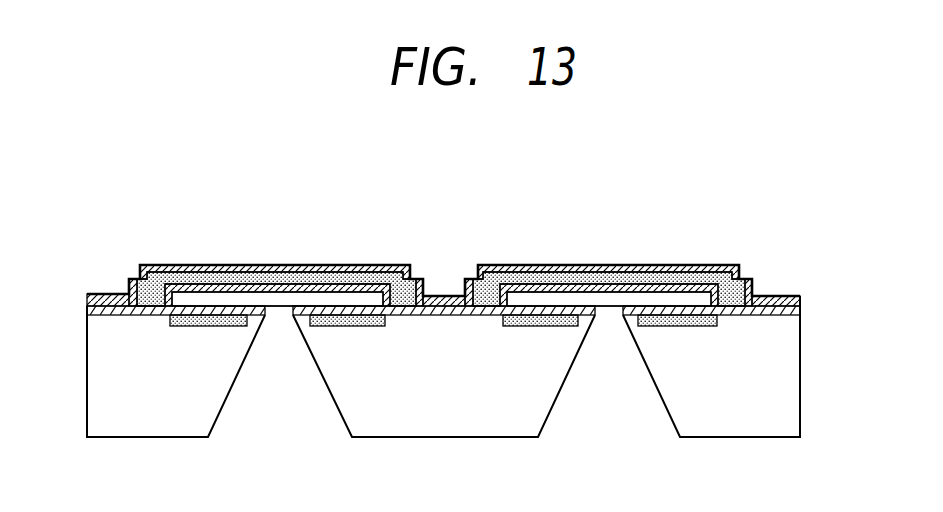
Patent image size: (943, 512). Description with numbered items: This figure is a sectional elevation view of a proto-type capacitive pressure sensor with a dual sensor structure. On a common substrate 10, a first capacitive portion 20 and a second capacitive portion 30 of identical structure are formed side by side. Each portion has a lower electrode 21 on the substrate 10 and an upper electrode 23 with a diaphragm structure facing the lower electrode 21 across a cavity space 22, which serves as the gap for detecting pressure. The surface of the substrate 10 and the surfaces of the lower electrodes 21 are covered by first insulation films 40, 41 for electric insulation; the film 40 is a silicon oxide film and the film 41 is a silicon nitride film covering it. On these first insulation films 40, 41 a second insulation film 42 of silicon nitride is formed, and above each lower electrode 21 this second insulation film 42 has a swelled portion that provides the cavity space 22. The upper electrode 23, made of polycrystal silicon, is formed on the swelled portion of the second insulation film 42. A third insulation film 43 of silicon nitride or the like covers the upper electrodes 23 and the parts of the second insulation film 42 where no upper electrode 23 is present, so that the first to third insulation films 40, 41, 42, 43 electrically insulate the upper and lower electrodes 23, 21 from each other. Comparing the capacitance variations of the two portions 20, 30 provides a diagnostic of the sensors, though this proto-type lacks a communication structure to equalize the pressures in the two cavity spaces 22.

The substrate 10 is at (787, 397).
The first capacitive portion 20 is at (382, 182).
The second capacitive portion 30 is at (712, 182).
The lower electrode 21 is at (195, 327).
The cavity space 22 is at (250, 297).
The upper electrode 23 is at (173, 266).
The first insulation film 40 is at (483, 322).
The first insulation film 41 is at (803, 311).
The second insulation film 42 is at (803, 305).
The third insulation film 43 is at (803, 297).